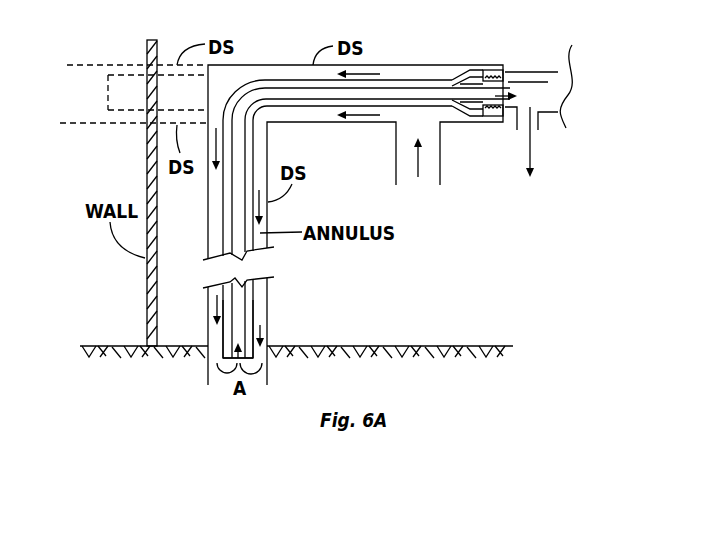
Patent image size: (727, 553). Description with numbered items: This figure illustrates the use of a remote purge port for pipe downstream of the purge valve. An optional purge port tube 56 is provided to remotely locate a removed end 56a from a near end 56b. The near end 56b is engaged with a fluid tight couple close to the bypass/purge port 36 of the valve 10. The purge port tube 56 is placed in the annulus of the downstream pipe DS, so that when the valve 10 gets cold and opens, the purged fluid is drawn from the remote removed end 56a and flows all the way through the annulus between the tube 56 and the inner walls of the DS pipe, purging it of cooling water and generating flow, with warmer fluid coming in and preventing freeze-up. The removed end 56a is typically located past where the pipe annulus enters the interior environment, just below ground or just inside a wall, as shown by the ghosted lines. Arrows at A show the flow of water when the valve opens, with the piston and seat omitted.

The valve 10 is at (545, 136).
The bypass/purge port 36 is at (508, 88).
The purge port tube 56 is at (400, 80).
The removed end 56a is at (115, 73).
The near end 56b is at (457, 112).